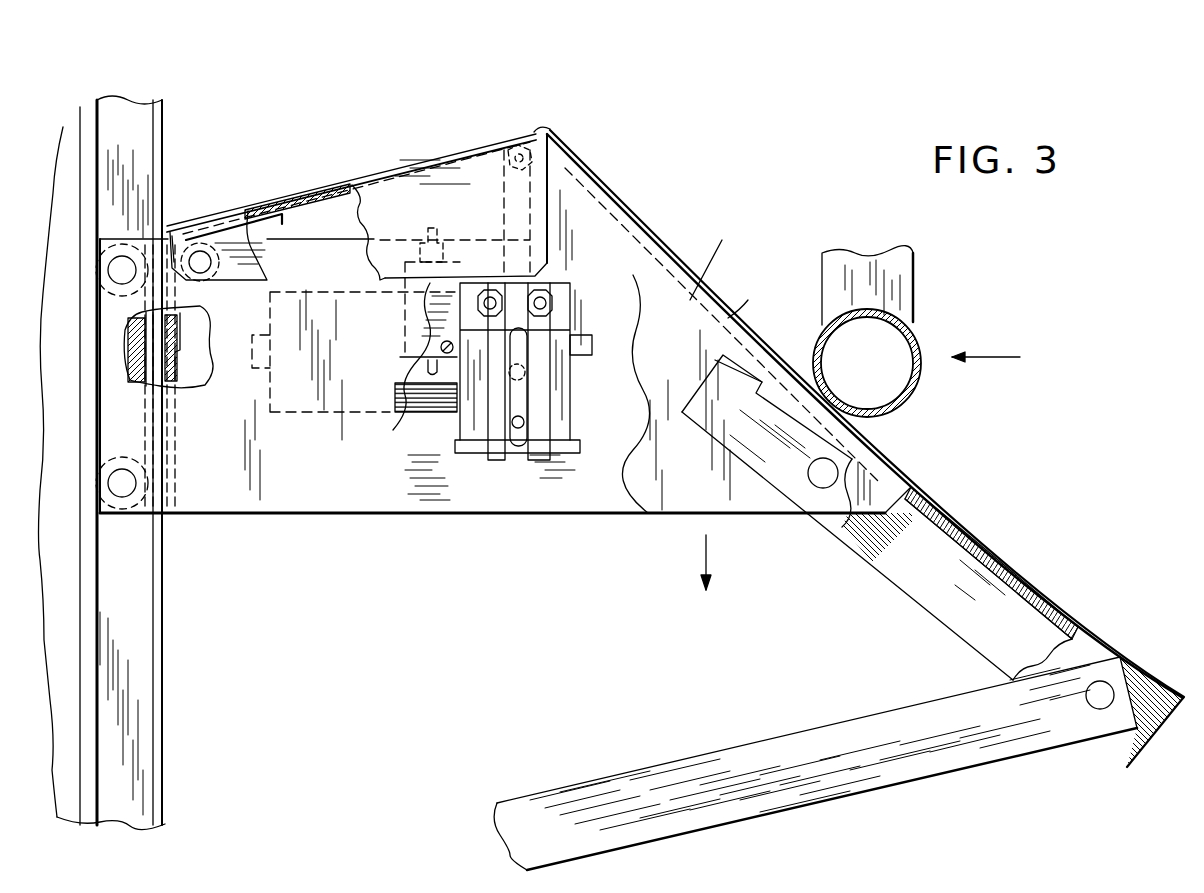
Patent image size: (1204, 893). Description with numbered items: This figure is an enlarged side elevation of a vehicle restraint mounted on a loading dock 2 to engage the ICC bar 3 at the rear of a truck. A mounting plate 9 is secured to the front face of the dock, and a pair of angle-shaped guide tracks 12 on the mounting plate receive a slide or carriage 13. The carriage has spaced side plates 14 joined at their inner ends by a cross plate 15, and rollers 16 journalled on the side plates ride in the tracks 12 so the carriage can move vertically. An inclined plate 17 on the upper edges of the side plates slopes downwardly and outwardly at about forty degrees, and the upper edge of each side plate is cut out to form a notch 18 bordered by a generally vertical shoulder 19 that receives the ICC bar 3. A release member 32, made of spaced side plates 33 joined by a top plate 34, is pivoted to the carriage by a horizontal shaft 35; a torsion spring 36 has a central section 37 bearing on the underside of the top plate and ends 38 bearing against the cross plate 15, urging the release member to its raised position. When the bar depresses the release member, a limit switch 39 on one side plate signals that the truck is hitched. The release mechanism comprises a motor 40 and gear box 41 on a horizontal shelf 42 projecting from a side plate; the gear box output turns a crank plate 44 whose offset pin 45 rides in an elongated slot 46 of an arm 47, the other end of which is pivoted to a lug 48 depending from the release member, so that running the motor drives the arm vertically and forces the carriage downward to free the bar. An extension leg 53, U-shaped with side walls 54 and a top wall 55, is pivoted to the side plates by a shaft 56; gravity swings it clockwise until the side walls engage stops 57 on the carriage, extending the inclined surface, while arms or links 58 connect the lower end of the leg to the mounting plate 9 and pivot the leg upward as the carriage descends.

The loading dock 2 is at (63, 134).
The mounting plate 9 is at (80, 184).
The guide tracks 12 is at (133, 100).
The rollers 16 is at (108, 270).
The torsion spring 36 is at (216, 248).
The top plate 34 is at (305, 188).
The notch 18 is at (335, 205).
The side plates 33 is at (397, 178).
The release member 32 is at (429, 154).
The shoulder 19 is at (505, 200).
The lug 48 is at (547, 128).
The slide or carriage 13 is at (625, 215).
The side plates 14 is at (709, 262).
The inclined plate 17 is at (748, 300).
The ICC bar 3 is at (918, 332).
The central section 37 is at (283, 222).
The limit switch 39 is at (425, 228).
The arm 47 is at (530, 287).
The elongated slot 46 is at (520, 335).
The horizontal shaft 35 is at (203, 272).
The ends 38 is at (172, 322).
The cross plate 15 is at (178, 378).
The gear box 41 is at (570, 378).
The pin 45 is at (524, 420).
The motor 40 is at (420, 402).
The crank plate 44 is at (498, 455).
The horizontal shelf 42 is at (575, 455).
The stops 57 is at (730, 363).
The shaft 56 is at (818, 480).
The extension leg 53 is at (990, 548).
The top wall 55 is at (1025, 580).
The side walls 54 is at (945, 615).
The arms or links 58 is at (848, 780).